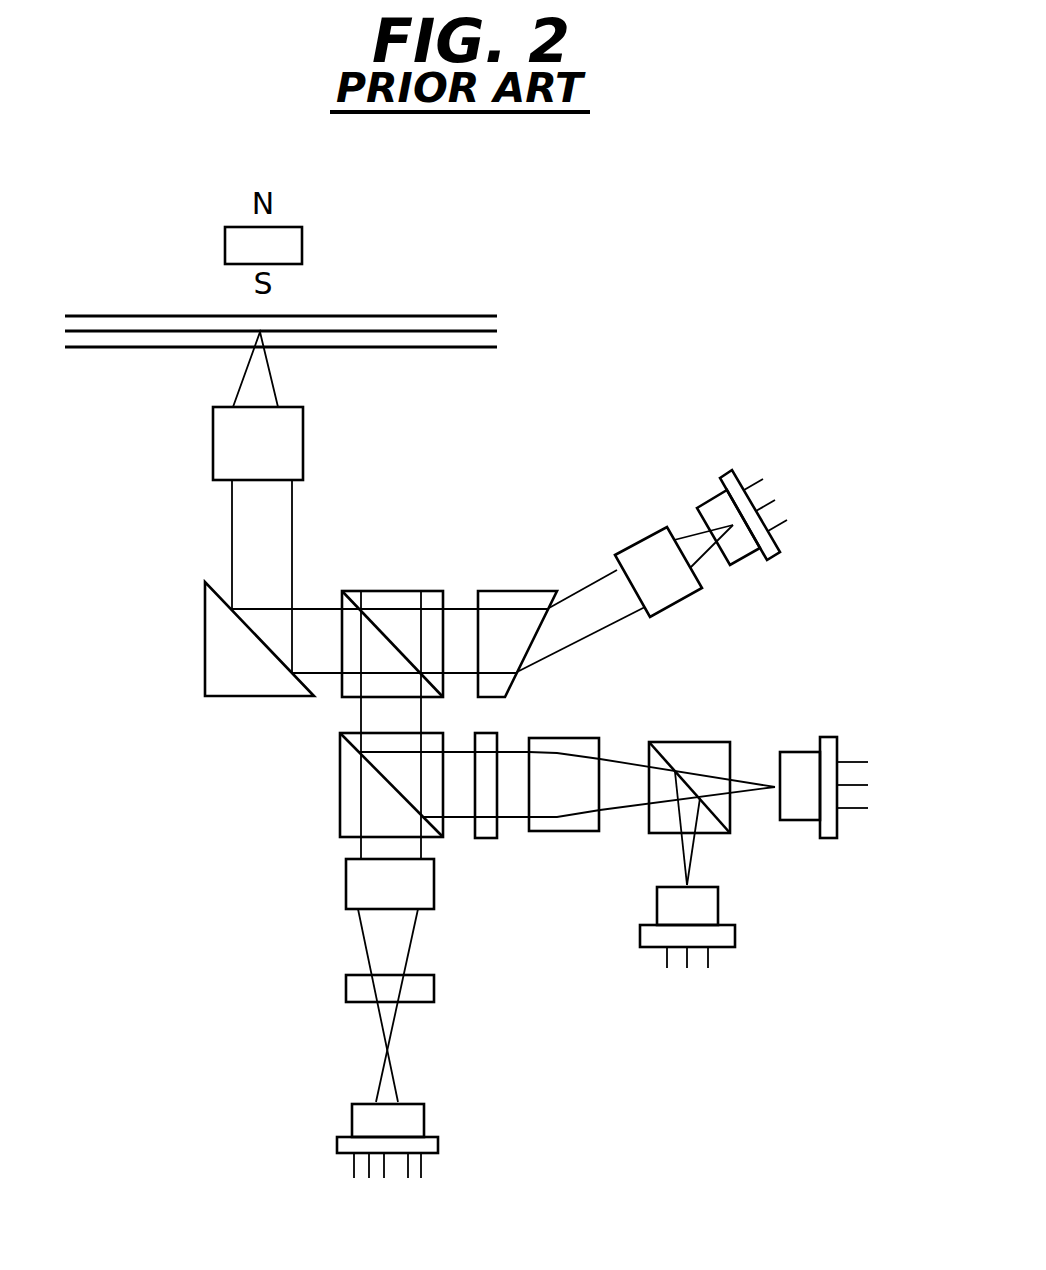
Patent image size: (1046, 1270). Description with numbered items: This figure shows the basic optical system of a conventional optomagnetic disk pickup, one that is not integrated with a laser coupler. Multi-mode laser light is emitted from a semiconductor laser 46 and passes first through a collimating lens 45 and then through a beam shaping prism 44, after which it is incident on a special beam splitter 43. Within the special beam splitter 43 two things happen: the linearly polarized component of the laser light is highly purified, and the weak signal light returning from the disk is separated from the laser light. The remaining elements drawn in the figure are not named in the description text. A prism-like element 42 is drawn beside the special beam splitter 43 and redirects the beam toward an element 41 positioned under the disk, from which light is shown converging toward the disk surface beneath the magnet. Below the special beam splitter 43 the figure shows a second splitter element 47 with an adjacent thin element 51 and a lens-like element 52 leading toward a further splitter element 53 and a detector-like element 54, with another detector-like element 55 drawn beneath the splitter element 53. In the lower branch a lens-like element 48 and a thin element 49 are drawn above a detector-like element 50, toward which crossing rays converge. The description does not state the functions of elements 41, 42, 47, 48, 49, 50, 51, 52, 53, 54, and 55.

The objective lens 41 is at (213, 443).
The reflecting prism 42 is at (205, 673).
The special beam splitter 43 is at (346, 591).
The beam shaping prism 44 is at (490, 581).
The collimating lens 45 is at (617, 555).
The semiconductor laser 46 is at (699, 508).
The beam splitter 47 is at (340, 818).
The condenser lens 48 is at (346, 898).
The cylindrical lens 49 is at (346, 1000).
The photodetector 50 is at (352, 1108).
The half-wave plate 51 is at (475, 835).
The condenser lens 52 is at (537, 832).
The polarizing beam splitter 53 is at (697, 742).
The photodetector 54 is at (803, 752).
The photodetector 55 is at (718, 893).